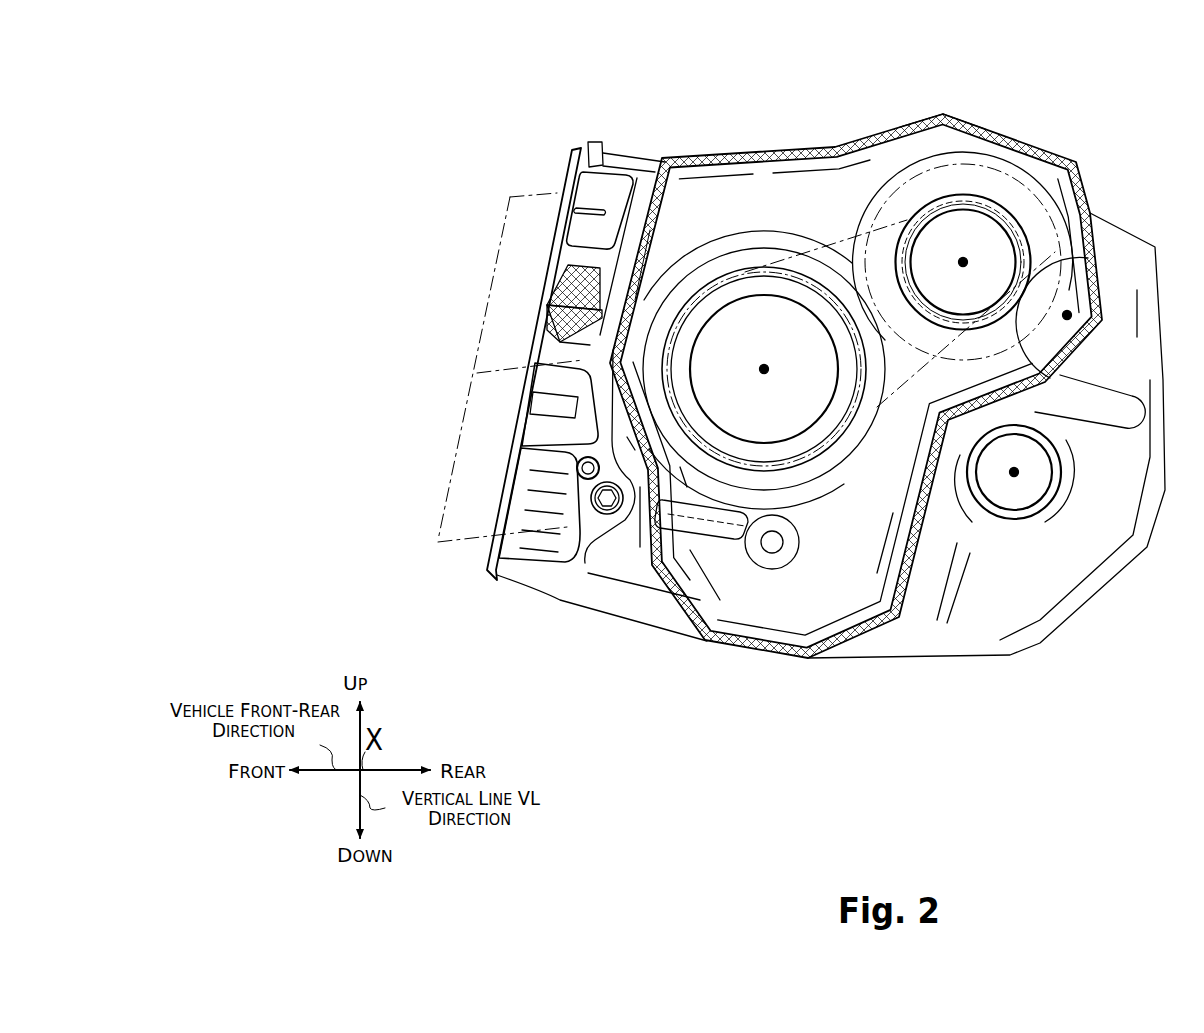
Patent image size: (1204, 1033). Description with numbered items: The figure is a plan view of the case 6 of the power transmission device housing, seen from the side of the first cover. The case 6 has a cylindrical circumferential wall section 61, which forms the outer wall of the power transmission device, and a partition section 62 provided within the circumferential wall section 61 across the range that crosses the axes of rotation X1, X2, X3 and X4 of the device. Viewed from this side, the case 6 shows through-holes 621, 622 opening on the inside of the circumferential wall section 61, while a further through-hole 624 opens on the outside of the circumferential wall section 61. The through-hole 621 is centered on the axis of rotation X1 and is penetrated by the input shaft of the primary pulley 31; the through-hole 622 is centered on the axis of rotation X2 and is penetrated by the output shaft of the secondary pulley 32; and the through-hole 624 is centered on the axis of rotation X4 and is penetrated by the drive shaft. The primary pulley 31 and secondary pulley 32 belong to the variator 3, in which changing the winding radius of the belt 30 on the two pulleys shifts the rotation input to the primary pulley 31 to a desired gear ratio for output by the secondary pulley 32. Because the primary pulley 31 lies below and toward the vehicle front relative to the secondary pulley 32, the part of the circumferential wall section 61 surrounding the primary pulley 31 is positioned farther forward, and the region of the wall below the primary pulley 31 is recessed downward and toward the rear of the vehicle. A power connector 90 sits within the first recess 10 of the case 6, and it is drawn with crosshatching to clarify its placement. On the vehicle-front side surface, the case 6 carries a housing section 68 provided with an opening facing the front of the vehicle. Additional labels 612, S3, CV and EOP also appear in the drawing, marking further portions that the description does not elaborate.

The variator 3 is at (1015, 172).
The case 6 is at (1097, 138).
The first recess 10 is at (604, 333).
The belt 30 is at (835, 240).
The primary pulley 31 is at (668, 383).
The secondary pulley 32 is at (962, 207).
The circumferential wall section 61 is at (872, 170).
The partition section 62 is at (779, 198).
The housing section 68 is at (523, 567).
The power connector 90 is at (568, 275).
The top wall portion 612 is at (945, 118).
The through-hole 621 is at (817, 348).
The through-hole 622 is at (990, 253).
The through-hole 624 is at (1010, 500).
The control valve CV is at (498, 260).
The electric oil pump EOP is at (443, 518).
The third space S3 is at (736, 228).
The axis of rotation X1 is at (767, 374).
The axis of rotation X2 is at (963, 267).
The axis of rotation X3 is at (1070, 318).
The axis of rotation X4 is at (1019, 472).